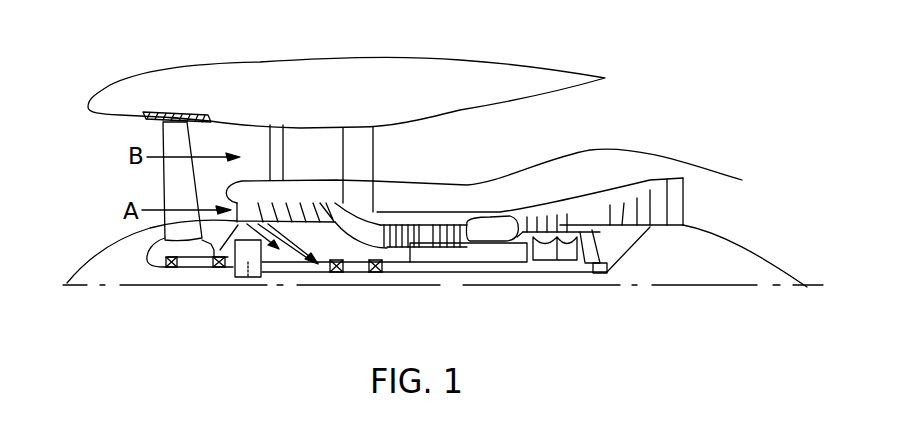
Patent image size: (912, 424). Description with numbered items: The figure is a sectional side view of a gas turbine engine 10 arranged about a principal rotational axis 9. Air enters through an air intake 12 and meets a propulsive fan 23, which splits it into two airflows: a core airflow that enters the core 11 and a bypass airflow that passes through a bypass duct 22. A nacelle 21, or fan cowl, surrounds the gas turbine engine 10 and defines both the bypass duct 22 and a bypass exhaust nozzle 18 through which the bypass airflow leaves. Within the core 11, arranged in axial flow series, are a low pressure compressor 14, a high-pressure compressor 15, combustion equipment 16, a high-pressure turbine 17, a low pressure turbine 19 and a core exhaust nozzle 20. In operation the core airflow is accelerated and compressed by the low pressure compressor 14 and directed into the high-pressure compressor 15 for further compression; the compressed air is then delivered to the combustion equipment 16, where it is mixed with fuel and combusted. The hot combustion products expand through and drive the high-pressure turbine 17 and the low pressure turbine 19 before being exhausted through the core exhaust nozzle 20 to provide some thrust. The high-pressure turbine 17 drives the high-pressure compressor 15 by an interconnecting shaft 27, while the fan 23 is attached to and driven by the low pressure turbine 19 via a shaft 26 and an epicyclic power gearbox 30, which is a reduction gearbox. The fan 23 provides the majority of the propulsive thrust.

The principal rotational axis 9 is at (650, 287).
The gas turbine engine 10 is at (148, 72).
The core 11 is at (478, 204).
The air intake 12 is at (103, 149).
The low pressure compressor 14 is at (308, 197).
The high-pressure compressor 15 is at (427, 230).
The combustion equipment 16 is at (500, 220).
The high-pressure turbine 17 is at (540, 218).
The bypass exhaust nozzle 18 is at (653, 113).
The low pressure turbine 19 is at (660, 192).
The core exhaust nozzle 20 is at (717, 210).
The nacelle 21 is at (365, 73).
The bypass duct 22 is at (583, 124).
The propulsive fan 23 is at (165, 185).
The shaft 26 is at (427, 275).
The interconnecting shaft 27 is at (457, 264).
The epicyclic power gearbox 30 is at (250, 270).